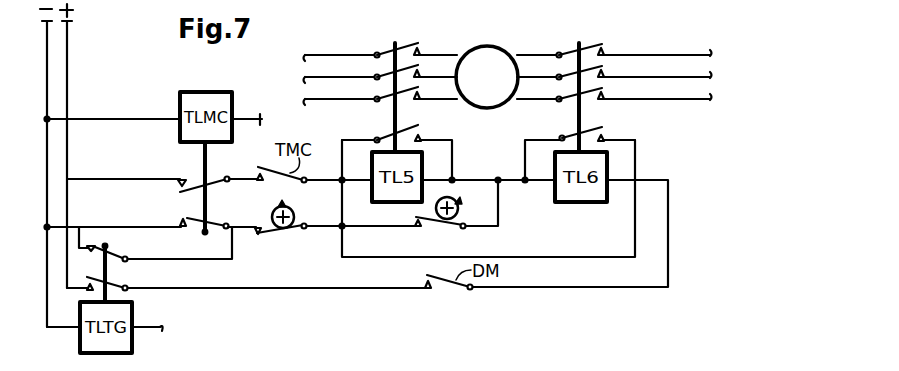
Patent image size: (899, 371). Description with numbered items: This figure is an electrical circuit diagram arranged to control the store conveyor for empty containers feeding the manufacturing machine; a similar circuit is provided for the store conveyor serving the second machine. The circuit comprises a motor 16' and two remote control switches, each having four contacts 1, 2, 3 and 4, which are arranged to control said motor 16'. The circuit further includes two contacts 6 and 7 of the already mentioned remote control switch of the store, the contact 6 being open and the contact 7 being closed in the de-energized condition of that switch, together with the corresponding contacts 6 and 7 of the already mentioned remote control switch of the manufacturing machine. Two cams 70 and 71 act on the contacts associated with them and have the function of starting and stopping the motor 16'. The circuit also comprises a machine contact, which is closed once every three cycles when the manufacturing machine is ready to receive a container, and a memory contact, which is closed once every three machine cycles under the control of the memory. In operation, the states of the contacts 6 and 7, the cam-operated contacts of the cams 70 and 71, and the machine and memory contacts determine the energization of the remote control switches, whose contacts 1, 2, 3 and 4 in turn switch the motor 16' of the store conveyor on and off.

The phase contact 1 of line contactor 1 is at (495, 48).
The phase contact 2 of line contactor 2 is at (495, 70).
The phase contact 3 of line contactor 3 is at (495, 92).
The auxiliary holding contact 4 is at (498, 132).
The contact 6 is at (164, 228).
The contact 7 is at (164, 235).
The motor 16' is at (487, 94).
The cam 70 is at (460, 211).
The cam 71 is at (273, 219).